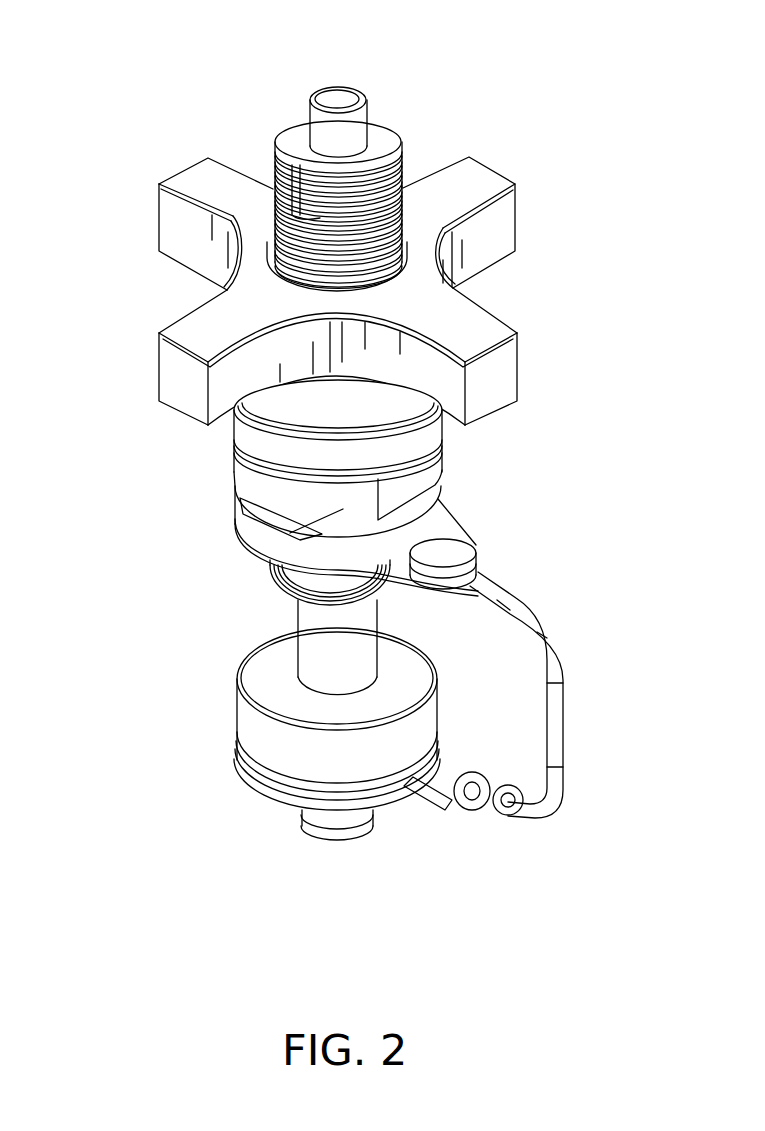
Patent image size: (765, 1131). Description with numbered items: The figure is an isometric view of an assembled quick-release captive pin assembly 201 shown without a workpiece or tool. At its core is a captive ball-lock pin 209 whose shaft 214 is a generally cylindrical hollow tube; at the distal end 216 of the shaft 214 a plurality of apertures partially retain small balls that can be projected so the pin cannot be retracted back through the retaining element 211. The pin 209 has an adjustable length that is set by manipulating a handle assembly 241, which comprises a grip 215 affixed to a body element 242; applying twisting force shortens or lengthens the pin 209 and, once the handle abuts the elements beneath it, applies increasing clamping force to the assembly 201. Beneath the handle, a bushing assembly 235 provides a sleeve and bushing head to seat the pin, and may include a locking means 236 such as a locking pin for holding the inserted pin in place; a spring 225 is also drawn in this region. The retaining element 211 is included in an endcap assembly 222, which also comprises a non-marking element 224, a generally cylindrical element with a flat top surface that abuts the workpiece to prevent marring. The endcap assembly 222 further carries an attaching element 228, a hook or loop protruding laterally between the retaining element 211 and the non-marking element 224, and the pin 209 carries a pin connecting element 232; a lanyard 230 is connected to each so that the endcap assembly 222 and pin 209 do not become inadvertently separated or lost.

The quick-release captive pin assembly 201 is at (150, 63).
The captive ball-lock pin 209 is at (342, 93).
The grip 215 is at (487, 172).
The handle assembly 241 is at (305, 397).
The body element 242 is at (405, 439).
The bushing assembly 235 is at (410, 485).
The locking means 236 is at (250, 512).
The pin connecting element 232 is at (462, 556).
The spring 225 is at (268, 575).
The shaft 214 is at (307, 614).
The lanyard 230 is at (543, 630).
The endcap assembly 222 is at (238, 733).
The non-marking element 224 is at (285, 755).
The retaining element 211 is at (387, 802).
The distal end 216 is at (327, 837).
The attaching element 228 is at (445, 807).